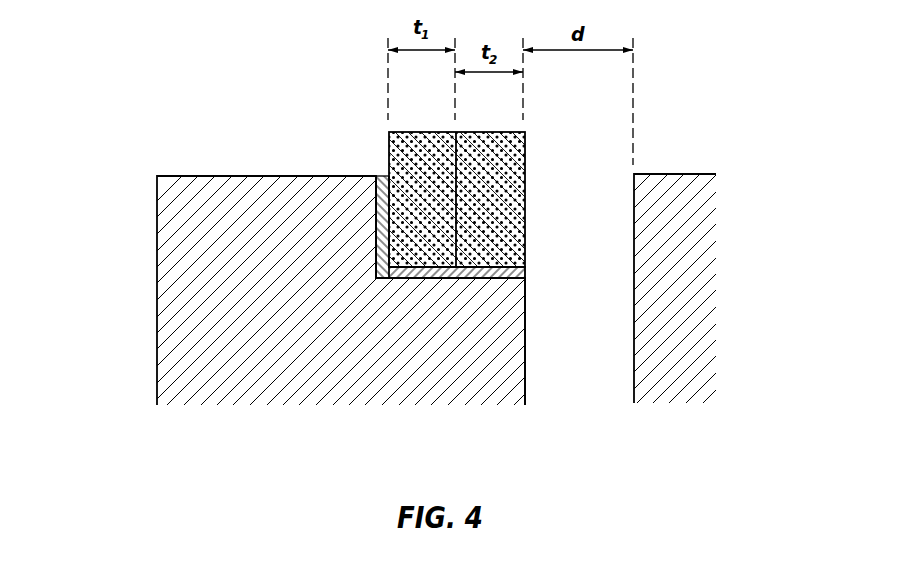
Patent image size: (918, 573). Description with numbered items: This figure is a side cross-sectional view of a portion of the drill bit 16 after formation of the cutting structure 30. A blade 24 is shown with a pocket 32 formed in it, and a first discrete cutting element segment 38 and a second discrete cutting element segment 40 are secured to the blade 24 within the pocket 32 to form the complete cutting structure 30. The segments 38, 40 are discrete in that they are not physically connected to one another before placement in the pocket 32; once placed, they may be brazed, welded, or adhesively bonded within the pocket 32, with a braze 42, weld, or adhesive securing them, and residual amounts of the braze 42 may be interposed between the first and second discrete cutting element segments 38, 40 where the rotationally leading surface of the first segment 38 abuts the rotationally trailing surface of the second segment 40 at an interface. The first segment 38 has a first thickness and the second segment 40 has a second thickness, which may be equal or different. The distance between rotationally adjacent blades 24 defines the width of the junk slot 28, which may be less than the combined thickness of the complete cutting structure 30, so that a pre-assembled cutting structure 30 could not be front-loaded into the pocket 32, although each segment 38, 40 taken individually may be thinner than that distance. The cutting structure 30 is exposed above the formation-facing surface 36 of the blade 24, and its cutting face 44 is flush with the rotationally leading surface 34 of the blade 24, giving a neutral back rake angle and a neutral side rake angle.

The drill bit 16 is at (124, 122).
The blade 24 is at (183, 268).
The junk slot 28 is at (594, 384).
The cutting structure 30 is at (493, 448).
The pocket 32 is at (503, 276).
The rotationally leading surface 34 is at (526, 330).
The formation-facing surface 36 is at (270, 175).
The first discrete cutting element segment 38 is at (413, 247).
The second discrete cutting element segment 40 is at (487, 246).
The braze 42 is at (525, 268).
The cutting face 44 is at (525, 187).